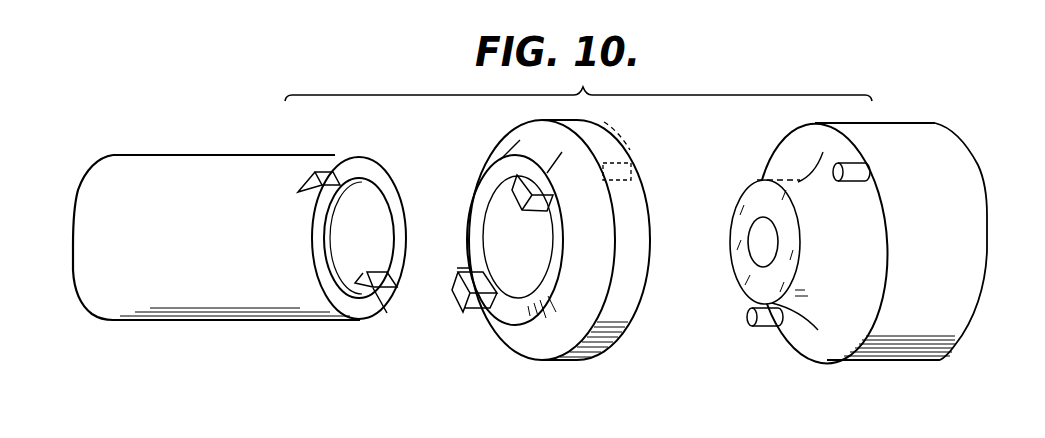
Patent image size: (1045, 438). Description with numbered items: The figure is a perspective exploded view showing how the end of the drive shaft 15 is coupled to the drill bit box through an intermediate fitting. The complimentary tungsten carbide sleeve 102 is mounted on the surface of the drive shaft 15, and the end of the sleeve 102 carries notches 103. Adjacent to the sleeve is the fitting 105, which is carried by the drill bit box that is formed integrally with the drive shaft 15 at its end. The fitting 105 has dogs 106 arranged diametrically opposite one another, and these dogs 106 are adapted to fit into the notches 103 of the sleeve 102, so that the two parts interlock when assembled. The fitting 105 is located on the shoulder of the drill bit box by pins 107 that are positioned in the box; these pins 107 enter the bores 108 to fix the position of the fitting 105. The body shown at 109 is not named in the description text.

The drive shaft 15 is at (746, 288).
The tungsten carbide sleeve 102 is at (216, 237).
The notches 103 is at (372, 268).
The fitting 105 is at (562, 343).
The dogs 106 is at (530, 211).
The pins 107 is at (870, 172).
The bores 108 is at (630, 166).
The cylindrical housing 109 is at (874, 243).